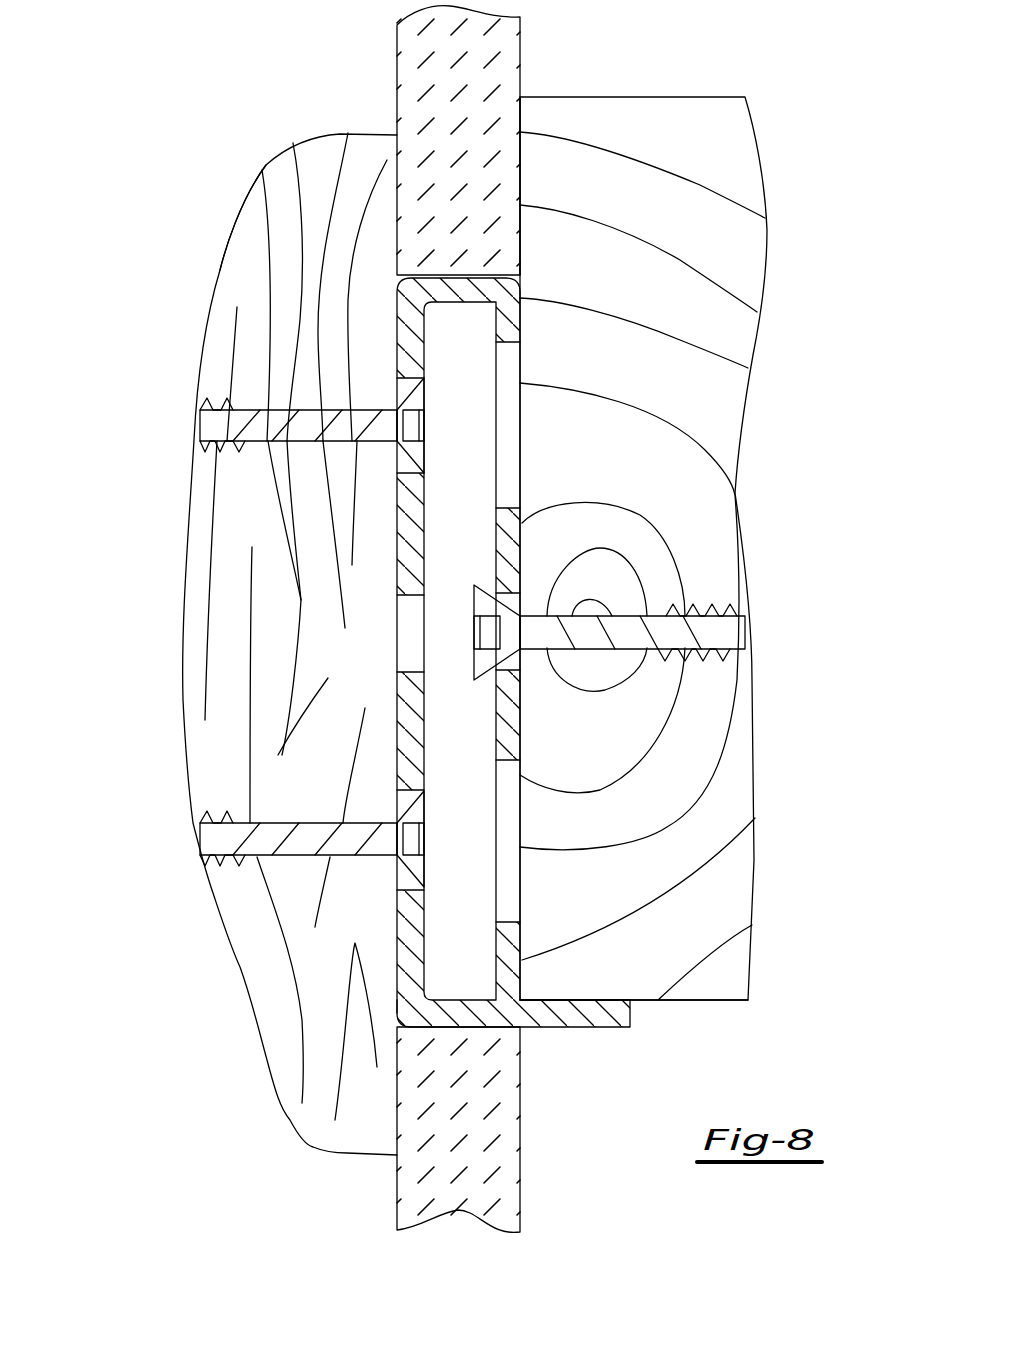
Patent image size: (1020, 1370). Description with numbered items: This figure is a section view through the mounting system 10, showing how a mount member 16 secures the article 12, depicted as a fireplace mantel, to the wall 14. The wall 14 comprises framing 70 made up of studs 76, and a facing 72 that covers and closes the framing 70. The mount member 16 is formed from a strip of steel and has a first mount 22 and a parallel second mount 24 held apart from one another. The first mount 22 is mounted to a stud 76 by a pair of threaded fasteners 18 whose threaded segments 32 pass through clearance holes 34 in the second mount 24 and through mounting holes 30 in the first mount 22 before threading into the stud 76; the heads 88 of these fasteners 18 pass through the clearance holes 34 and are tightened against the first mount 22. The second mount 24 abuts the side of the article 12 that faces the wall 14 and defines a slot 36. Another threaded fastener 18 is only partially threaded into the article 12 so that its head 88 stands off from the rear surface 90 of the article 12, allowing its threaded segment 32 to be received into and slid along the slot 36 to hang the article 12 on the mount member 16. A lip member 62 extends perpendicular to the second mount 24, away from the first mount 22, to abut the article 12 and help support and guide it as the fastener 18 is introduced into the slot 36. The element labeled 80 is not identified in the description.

The mounting system 10 is at (464, 677).
The article 12 is at (735, 132).
The wall 14 is at (548, 52).
The mount member 16 is at (510, 945).
The threaded fastener 18 is at (308, 420).
The first mount 22 is at (415, 712).
The second mount 24 is at (520, 736).
The mounting hole 30 is at (395, 458).
The threaded segment 32 is at (215, 440).
The clearance hole 34 is at (520, 420).
The slot 36 is at (520, 670).
The lip member 62 is at (570, 1015).
The framing 70 is at (247, 226).
The facing 72 is at (500, 1085).
The stud 76 is at (233, 275).
The board bottom edge 80 is at (597, 1000).
The head 88 is at (422, 410).
The rear surface 90 is at (520, 250).